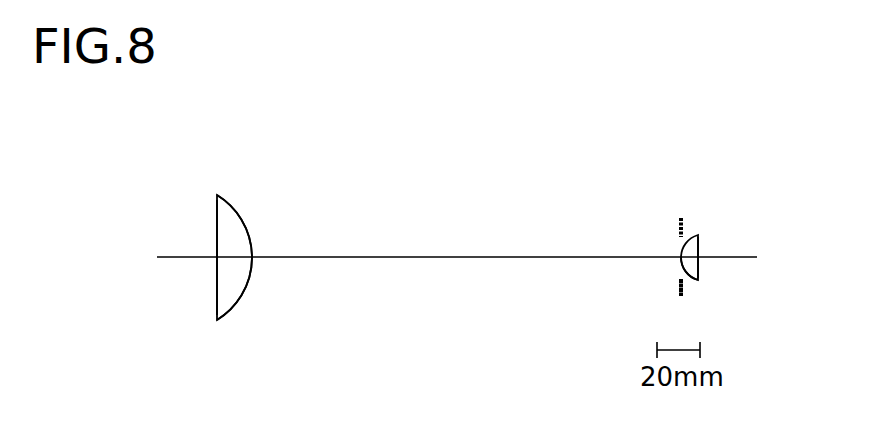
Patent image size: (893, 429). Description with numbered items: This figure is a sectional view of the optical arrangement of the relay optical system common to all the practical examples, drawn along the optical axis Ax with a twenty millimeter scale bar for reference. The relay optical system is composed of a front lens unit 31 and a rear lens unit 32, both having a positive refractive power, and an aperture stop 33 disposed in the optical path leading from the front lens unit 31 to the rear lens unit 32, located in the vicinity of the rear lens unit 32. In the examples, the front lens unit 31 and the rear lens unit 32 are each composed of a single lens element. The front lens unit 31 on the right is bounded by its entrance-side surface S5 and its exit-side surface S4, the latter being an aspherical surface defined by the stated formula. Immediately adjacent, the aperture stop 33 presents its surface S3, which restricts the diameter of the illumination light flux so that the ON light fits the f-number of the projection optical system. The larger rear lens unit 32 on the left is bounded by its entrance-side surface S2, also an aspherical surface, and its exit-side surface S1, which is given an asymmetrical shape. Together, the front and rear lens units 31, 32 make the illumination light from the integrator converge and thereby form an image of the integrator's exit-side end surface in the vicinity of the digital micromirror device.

The front lens unit 31 is at (702, 212).
The rear lens unit 32 is at (239, 188).
The aperture stop 33 is at (678, 206).
The optical axis Ax is at (438, 258).
The exit-side surface of the rear lens unit S1 is at (217, 300).
The entrance-side surface of the rear lens unit S2 is at (238, 298).
The surface of the aperture stop S3 is at (678, 287).
The exit-side surface of the front lens unit S4 is at (690, 282).
The entrance-side surface of the front lens unit S5 is at (700, 267).